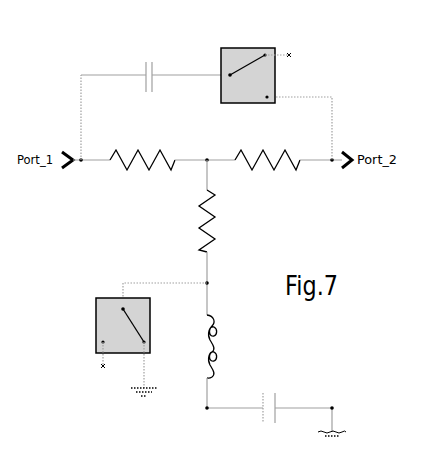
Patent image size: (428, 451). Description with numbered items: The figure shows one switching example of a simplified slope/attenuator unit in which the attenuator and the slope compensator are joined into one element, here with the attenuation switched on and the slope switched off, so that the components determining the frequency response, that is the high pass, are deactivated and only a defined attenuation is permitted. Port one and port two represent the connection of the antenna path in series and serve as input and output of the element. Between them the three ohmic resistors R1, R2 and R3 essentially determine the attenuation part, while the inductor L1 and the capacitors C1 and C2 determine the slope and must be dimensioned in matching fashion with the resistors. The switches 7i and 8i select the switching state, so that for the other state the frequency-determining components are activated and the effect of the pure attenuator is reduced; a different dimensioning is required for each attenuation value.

The first SPDT switch 7i is at (250, 48).
The second SPDT switch 8i is at (93, 337).
The capacitor C1 is at (145, 86).
The capacitor C2 is at (268, 399).
The ohmic resistor R1 is at (142, 170).
The ohmic resistor R2 is at (267, 170).
The ohmic resistor R3 is at (195, 221).
The inductor L1 is at (200, 346).